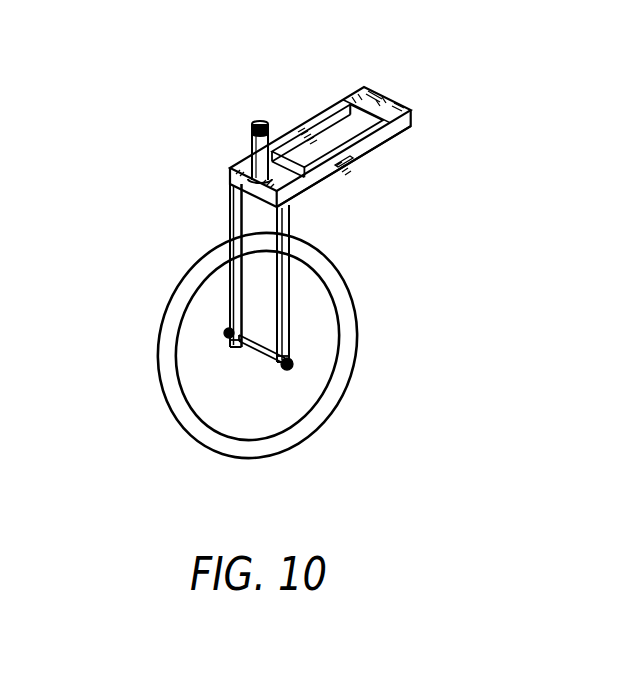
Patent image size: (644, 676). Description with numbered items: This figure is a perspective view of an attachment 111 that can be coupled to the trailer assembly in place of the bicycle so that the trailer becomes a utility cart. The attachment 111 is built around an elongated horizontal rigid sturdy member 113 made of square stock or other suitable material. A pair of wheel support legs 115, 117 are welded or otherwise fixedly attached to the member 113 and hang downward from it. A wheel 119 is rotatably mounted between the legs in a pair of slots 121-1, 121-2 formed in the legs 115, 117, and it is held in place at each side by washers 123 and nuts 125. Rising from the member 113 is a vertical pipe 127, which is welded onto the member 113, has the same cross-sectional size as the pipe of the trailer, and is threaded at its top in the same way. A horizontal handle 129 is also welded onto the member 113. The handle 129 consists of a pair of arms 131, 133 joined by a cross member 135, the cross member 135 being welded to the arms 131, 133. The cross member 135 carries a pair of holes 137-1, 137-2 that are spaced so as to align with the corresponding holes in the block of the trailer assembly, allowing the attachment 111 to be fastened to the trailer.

The attachment 111 is at (168, 183).
The elongated horizontal rigid sturdy member 113 is at (230, 180).
The wheel support leg 115 is at (229, 222).
The wheel support leg 117 is at (290, 230).
The wheel 119 is at (338, 286).
The slot 121-1 is at (287, 366).
The slot 121-2 is at (235, 350).
The washer 123 is at (223, 340).
The nut 125 is at (228, 332).
The vertical pipe 127 is at (252, 152).
The horizontal handle 129 is at (345, 176).
The arm 131 is at (332, 105).
The arm 133 is at (382, 142).
The cross member 135 is at (381, 96).
The hole 137-1 is at (398, 107).
The hole 137-2 is at (375, 96).